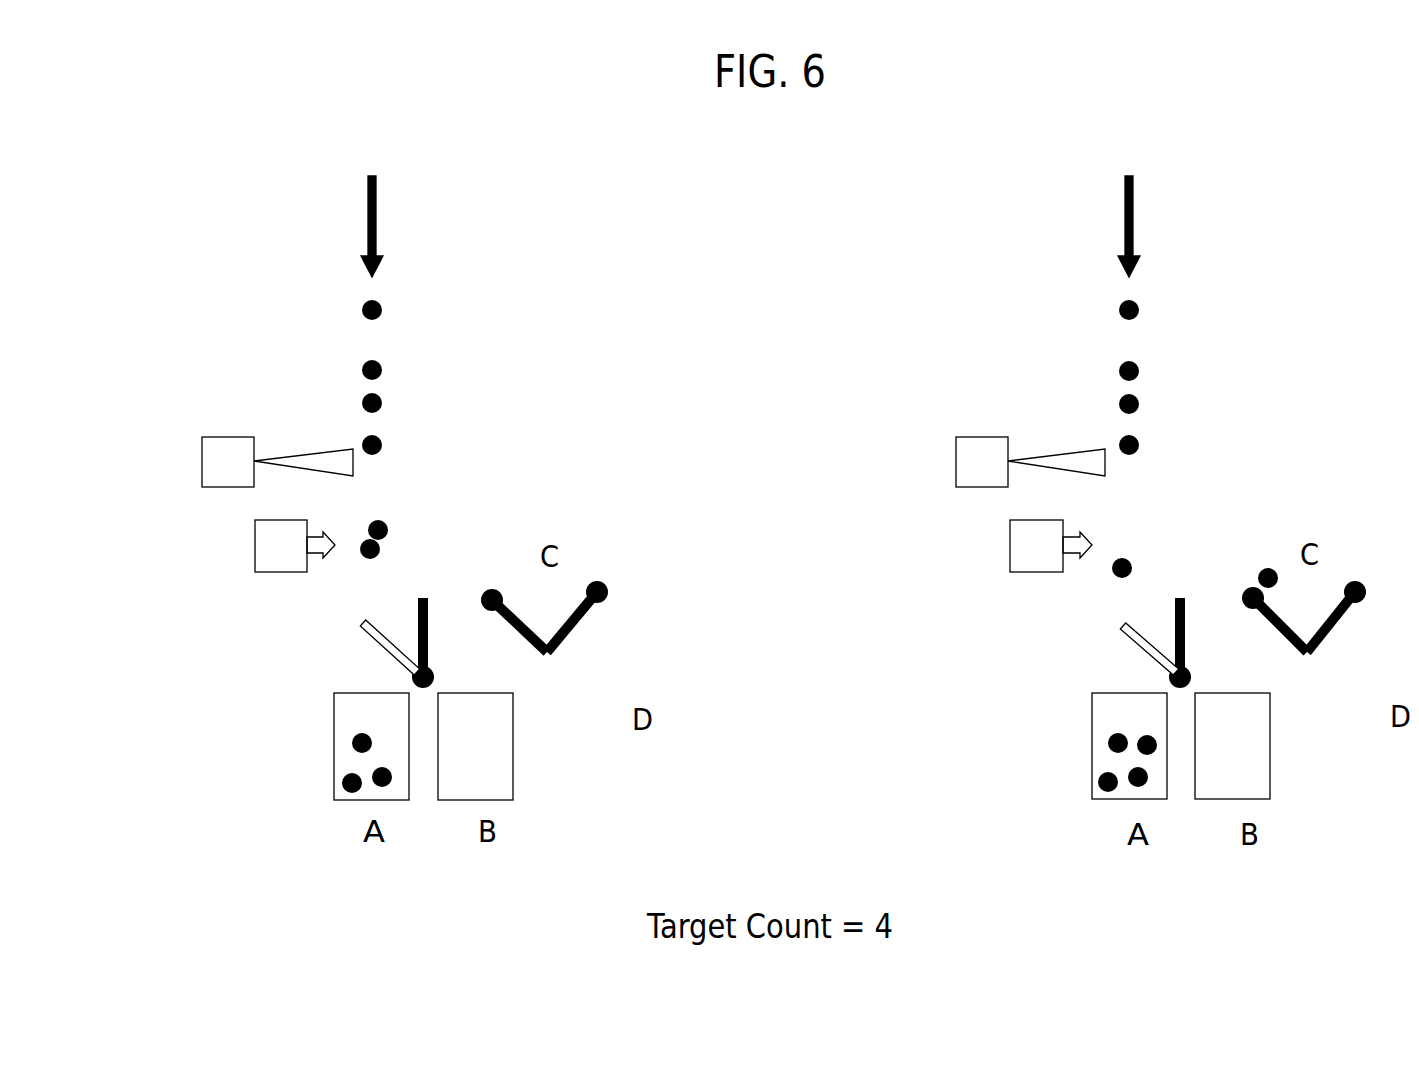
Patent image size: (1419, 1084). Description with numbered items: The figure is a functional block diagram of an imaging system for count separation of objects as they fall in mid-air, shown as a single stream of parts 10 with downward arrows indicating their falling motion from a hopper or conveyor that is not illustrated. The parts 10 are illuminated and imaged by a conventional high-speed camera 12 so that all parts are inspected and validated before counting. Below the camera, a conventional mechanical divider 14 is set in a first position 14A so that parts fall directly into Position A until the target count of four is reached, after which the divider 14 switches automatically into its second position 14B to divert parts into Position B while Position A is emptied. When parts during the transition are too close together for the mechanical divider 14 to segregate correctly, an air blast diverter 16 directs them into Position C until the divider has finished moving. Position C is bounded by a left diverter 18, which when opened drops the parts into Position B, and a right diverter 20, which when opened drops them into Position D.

The parts 10 is at (398, 366).
The high-speed camera 12 is at (210, 477).
The mechanical divider 14 is at (763, 625).
The first position 14A is at (430, 603).
The second position 14B is at (367, 637).
The air blast diverter 16 is at (258, 562).
The left diverter 18 is at (510, 628).
The right diverter 20 is at (578, 623).